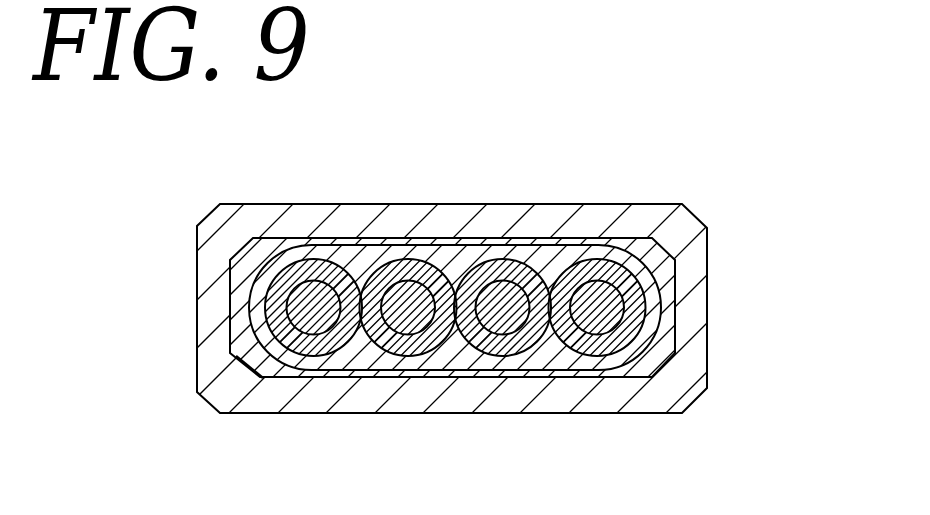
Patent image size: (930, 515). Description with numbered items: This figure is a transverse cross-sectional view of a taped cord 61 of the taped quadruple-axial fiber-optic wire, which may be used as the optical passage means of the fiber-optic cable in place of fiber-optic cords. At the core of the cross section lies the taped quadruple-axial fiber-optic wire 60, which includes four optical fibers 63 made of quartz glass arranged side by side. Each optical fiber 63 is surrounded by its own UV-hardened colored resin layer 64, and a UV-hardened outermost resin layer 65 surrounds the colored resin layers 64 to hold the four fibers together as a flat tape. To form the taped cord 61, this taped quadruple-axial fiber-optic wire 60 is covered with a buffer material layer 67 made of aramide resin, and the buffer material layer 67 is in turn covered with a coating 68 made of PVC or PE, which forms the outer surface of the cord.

The taped quadruple-axial fiber-optic wire 60 is at (454, 304).
The taped cord 61 is at (455, 288).
The optical fiber 63 is at (323, 333).
The UV-hardened colored resin layer 64 is at (336, 268).
The UV-hardened outermost resin layer 65 is at (497, 362).
The buffer material layer 67 is at (667, 275).
The coating 68 is at (558, 215).